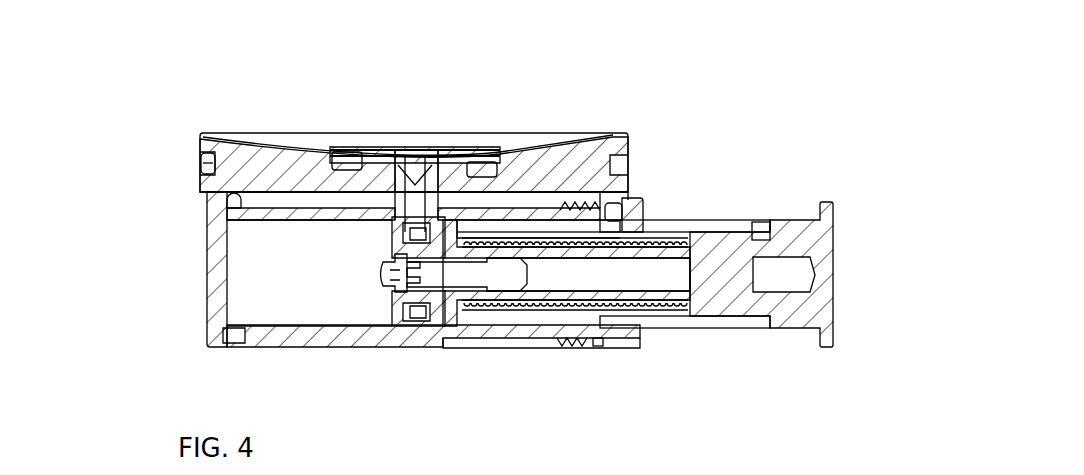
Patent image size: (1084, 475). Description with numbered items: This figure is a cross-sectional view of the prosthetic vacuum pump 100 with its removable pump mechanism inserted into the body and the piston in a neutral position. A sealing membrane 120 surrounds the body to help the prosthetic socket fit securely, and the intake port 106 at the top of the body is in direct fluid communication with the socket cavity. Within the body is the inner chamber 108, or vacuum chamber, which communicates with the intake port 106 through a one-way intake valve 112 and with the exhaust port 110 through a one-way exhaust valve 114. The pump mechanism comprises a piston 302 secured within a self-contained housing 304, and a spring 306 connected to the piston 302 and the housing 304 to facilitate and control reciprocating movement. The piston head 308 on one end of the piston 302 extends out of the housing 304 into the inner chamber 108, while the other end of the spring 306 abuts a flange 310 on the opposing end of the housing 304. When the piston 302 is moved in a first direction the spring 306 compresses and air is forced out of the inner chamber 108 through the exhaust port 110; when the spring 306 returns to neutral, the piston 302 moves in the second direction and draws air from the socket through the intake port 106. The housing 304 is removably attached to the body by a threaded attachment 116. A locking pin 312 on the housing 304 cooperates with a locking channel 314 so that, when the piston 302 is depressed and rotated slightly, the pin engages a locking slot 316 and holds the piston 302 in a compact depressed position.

The prosthetic vacuum pump 100 is at (158, 72).
The intake port 106 is at (375, 148).
The inner chamber 108 is at (312, 288).
The exhaust port 110 is at (383, 282).
The intake valve 112 is at (420, 150).
The exhaust valve 114 is at (383, 278).
The threaded attachment 116 is at (575, 205).
The sealing membrane 120 is at (205, 160).
The piston 302 is at (822, 310).
The housing 304 is at (640, 342).
The spring 306 is at (528, 245).
The piston head 308 is at (382, 335).
The flange 310 is at (478, 335).
The locking pin 312 is at (640, 210).
The locking channel 314 is at (685, 223).
The locking slot 316 is at (762, 222).